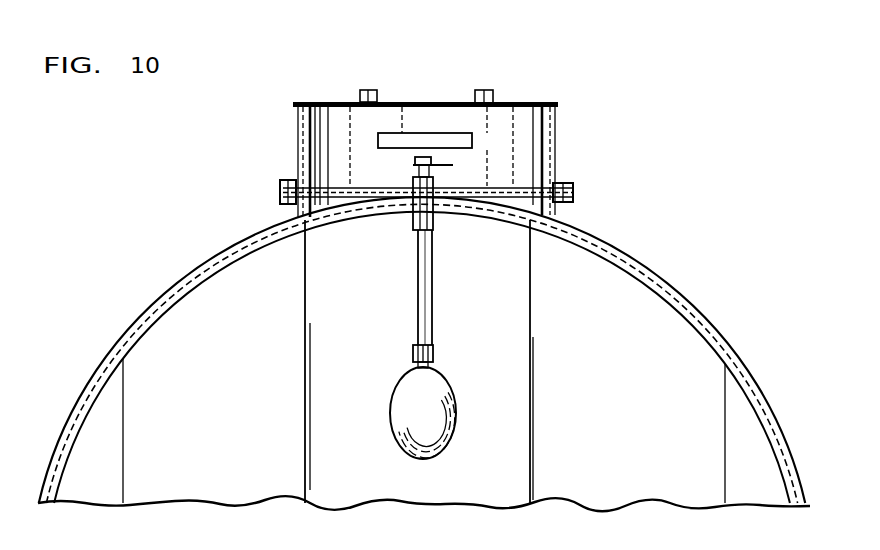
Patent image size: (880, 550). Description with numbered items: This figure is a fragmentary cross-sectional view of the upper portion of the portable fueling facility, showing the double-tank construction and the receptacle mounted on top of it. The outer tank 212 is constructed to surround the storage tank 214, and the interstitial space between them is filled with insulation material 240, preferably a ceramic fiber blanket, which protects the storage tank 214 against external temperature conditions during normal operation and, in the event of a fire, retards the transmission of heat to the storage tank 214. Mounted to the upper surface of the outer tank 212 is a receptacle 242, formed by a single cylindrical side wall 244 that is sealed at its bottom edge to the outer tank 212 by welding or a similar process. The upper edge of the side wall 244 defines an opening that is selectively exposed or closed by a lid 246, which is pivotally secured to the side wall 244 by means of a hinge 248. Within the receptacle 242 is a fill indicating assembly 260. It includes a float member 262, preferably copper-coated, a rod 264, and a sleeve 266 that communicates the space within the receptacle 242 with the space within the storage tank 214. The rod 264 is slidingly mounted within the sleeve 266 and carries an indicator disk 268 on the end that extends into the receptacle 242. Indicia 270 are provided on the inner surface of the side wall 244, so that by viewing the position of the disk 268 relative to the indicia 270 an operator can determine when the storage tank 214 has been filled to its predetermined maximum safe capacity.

The outer tank 212 is at (768, 386).
The storage tank 214 is at (658, 298).
The insulation material 240 is at (722, 331).
The receptacle 242 is at (430, 249).
The side wall 244 is at (552, 158).
The lid 246 is at (426, 103).
The hinge 248 is at (369, 89).
The fill indicating assembly 260 is at (431, 352).
The float member 262 is at (421, 434).
The rod 264 is at (432, 307).
The sleeve 266 is at (413, 221).
The indicator disk 268 is at (413, 165).
The indicia 270 is at (434, 136).